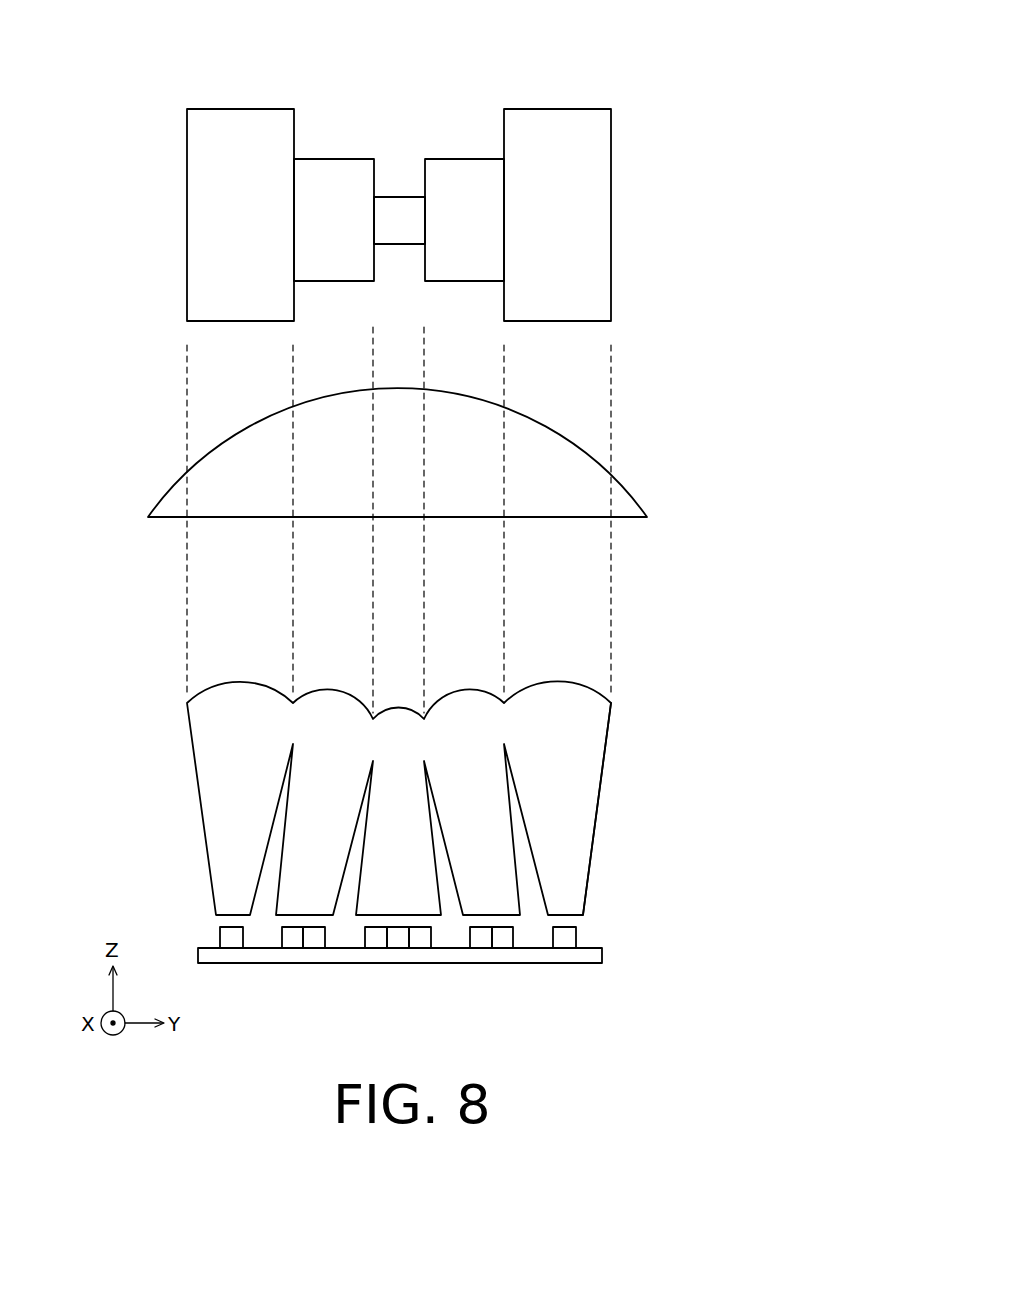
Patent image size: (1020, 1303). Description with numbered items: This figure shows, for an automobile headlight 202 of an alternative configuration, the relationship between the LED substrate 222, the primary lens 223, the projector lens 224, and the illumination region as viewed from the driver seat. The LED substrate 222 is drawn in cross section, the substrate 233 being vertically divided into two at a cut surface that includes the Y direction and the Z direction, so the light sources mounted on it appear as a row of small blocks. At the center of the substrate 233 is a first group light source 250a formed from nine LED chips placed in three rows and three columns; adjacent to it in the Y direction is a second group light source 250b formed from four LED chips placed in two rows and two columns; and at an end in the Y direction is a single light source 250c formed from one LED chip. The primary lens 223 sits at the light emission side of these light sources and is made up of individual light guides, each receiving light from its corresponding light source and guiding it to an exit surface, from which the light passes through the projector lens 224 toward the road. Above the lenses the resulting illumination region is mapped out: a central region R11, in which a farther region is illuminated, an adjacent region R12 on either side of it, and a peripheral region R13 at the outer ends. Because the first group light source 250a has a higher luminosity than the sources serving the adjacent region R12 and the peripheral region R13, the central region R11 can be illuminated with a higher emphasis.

The peripheral region R13 is at (242, 133).
The adjacent region R12 is at (335, 178).
The central region R11 is at (395, 206).
The projector lens 224 is at (623, 470).
The headlight 202 is at (641, 750).
The primary lens 223 is at (598, 810).
The LED substrate 222 is at (604, 948).
The substrate 233 is at (268, 955).
The first group light source 250a is at (378, 940).
The second group light source 250b is at (486, 940).
The single light source 250c is at (567, 940).